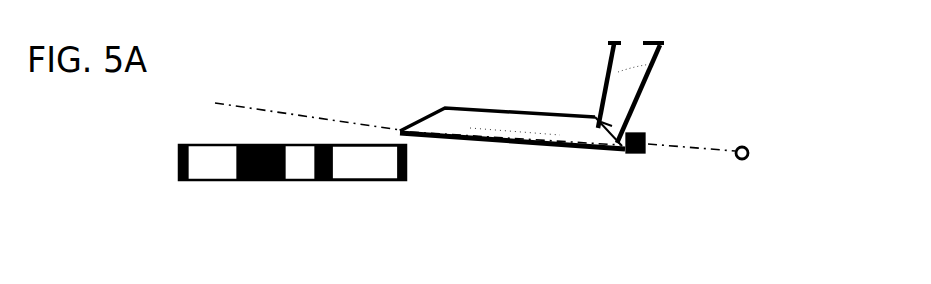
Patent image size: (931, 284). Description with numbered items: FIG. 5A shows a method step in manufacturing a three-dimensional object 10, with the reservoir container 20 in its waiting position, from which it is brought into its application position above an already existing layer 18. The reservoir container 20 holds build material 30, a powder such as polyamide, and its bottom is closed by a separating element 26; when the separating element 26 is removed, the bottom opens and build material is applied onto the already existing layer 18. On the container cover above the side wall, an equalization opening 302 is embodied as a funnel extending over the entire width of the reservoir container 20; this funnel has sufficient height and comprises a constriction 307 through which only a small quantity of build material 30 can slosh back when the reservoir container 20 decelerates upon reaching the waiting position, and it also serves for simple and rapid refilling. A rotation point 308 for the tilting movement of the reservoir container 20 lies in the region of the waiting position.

The three-dimensional object 10 is at (217, 168).
The already existing layer 18 is at (365, 141).
The reservoir container 20 is at (505, 98).
The separating element 26 is at (634, 155).
The build material 30 is at (553, 127).
The equalization opening 302 is at (660, 60).
The constriction 307 is at (603, 120).
The rotation point 308 is at (741, 160).